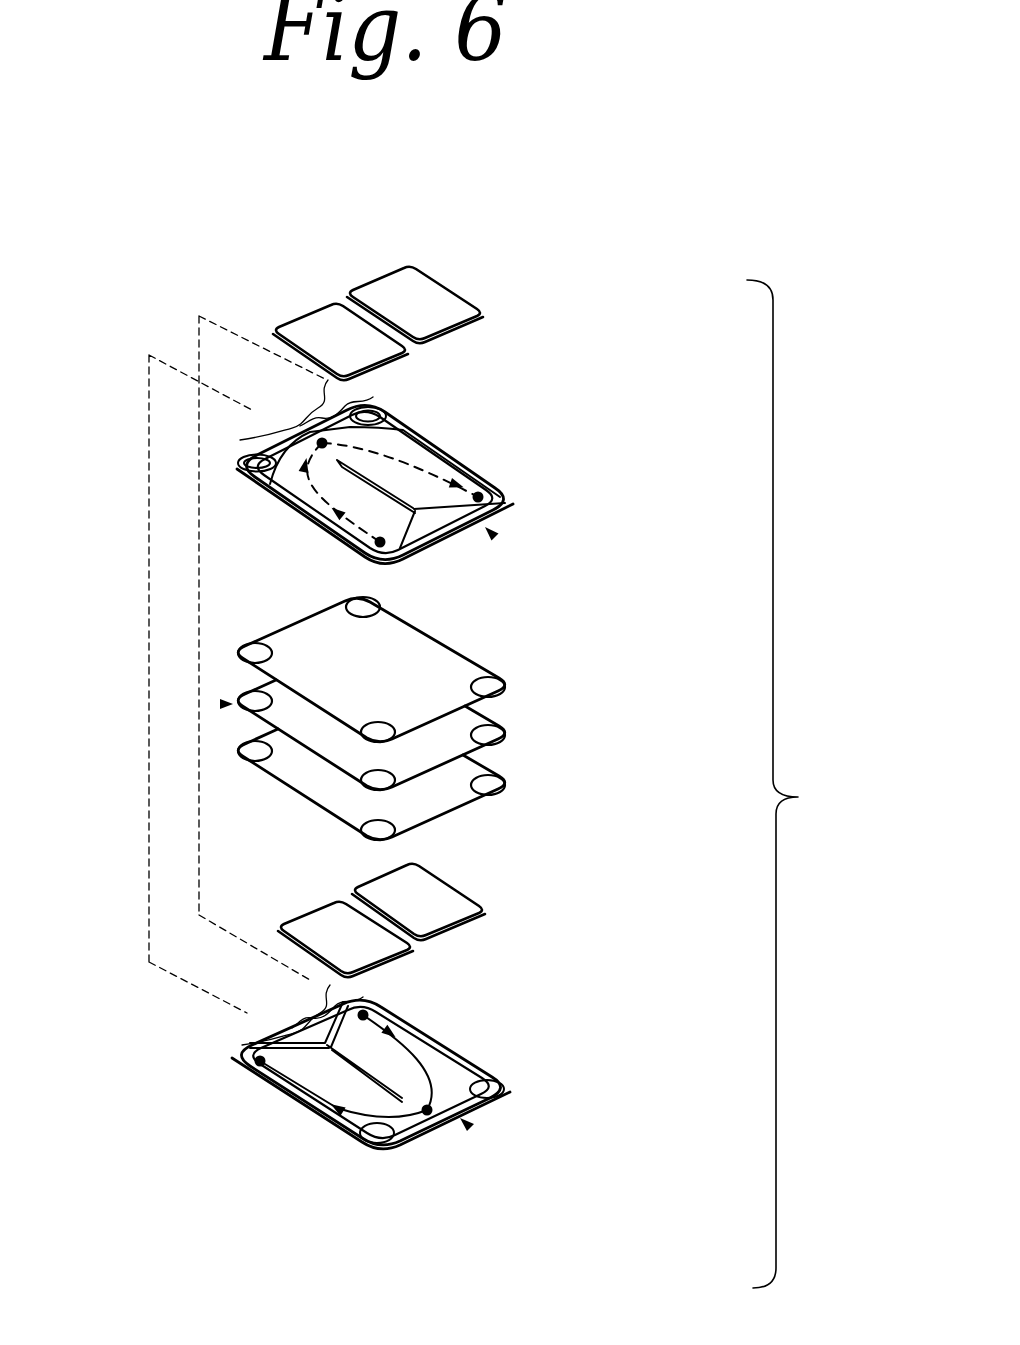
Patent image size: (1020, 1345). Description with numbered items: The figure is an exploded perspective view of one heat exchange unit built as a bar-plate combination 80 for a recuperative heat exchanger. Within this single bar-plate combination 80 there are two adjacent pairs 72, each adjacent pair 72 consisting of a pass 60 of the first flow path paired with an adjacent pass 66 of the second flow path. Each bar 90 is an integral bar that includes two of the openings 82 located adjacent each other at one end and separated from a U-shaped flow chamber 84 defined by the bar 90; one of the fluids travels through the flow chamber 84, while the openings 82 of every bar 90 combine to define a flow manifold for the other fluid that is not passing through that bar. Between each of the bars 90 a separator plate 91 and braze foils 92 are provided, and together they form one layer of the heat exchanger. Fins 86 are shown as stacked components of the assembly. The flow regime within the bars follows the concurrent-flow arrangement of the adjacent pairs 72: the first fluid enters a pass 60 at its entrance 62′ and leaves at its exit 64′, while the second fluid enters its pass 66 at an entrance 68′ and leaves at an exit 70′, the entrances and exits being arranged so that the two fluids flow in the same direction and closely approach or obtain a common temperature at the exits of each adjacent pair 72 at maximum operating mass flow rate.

The pass of the first flow path 60 is at (500, 495).
The entrance 62′ is at (383, 548).
The exit 64′ is at (514, 476).
The pass of the second flow path 66 is at (413, 1050).
The entrance 68′ is at (400, 1005).
The exit 70′ is at (430, 1202).
The adjacent pair 72 is at (199, 686).
The bar-plate combination 80 is at (801, 784).
The openings 82 is at (417, 402).
The U-shaped flow chamber 84 is at (417, 448).
The fins 86 is at (400, 352).
The bar 90 is at (492, 534).
The separator plate 91 is at (222, 704).
The braze foils 92 is at (513, 786).